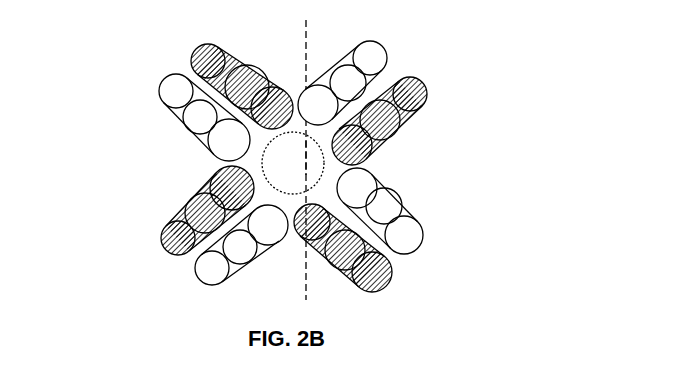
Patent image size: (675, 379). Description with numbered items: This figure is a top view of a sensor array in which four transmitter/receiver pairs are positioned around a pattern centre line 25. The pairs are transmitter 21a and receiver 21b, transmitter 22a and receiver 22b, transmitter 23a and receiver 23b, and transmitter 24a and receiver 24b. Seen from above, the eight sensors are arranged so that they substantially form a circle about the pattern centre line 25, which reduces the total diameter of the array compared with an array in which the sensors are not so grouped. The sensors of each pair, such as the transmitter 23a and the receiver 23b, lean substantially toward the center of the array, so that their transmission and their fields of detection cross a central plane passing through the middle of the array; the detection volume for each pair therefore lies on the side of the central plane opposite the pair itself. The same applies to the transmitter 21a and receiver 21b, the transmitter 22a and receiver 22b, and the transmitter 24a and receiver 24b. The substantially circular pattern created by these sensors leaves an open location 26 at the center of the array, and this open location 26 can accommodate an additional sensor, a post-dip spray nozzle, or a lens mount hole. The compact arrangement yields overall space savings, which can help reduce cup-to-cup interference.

The transmitter of first transmitter/receiver pair 21a is at (200, 213).
The receiver of first transmitter/receiver pair 21b is at (400, 193).
The transmitter of second transmitter/receiver pair 22a is at (175, 118).
The receiver of second transmitter/receiver pair 22b is at (420, 107).
The transmitter of third transmitter/receiver pair 23a is at (365, 62).
The receiver of third transmitter/receiver pair 23b is at (377, 275).
The transmitter of fourth transmitter/receiver pair 24a is at (200, 47).
The receiver of fourth transmitter/receiver pair 24b is at (215, 268).
The pattern centre line 25 is at (338, 155).
The open location 26 is at (290, 175).